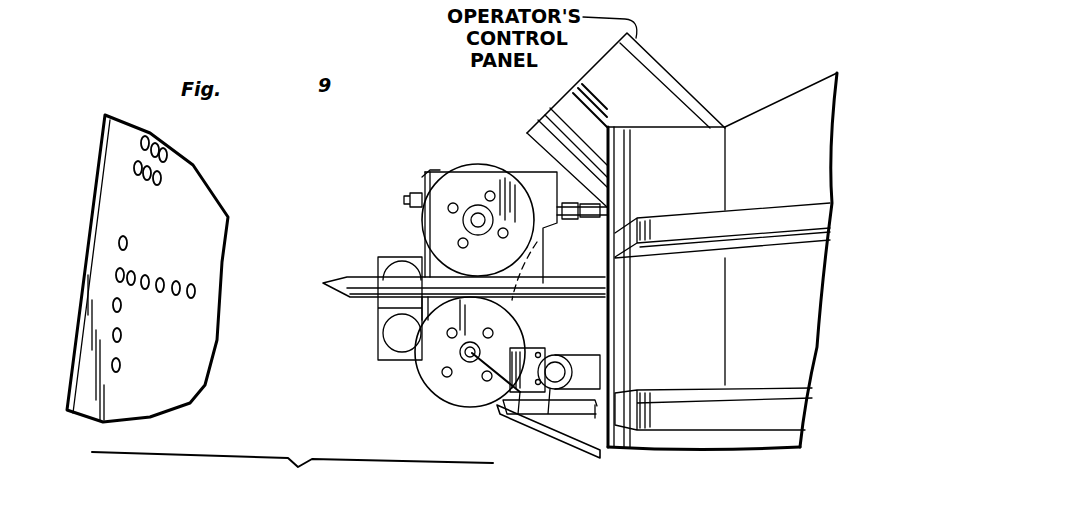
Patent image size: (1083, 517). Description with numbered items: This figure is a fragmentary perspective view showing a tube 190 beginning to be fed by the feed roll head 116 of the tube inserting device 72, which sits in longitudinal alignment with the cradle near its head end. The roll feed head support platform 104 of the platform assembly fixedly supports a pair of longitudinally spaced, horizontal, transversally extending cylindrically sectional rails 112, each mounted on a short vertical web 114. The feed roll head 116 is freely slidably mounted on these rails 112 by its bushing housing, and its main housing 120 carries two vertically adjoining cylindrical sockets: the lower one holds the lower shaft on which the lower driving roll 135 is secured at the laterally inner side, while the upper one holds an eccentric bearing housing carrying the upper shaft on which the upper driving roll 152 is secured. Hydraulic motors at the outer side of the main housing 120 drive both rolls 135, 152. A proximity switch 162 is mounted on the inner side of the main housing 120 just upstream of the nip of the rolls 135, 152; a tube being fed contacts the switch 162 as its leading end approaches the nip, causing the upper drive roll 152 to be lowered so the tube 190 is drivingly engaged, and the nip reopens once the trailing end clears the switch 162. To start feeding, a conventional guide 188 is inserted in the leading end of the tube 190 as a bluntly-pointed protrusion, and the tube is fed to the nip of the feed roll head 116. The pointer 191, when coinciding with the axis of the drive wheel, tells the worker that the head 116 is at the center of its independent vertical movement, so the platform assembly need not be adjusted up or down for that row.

The tube inserting device 72 is at (767, 108).
The roll feed head support platform 104 is at (572, 440).
The rails 112 is at (580, 373).
The short vertical webs 114 is at (557, 408).
The feed roll head 116 is at (473, 160).
The main housing 120 is at (525, 180).
The lower driving roll 135 is at (463, 390).
The upper driving roll 152 is at (445, 188).
The proximity switch 162 is at (543, 268).
The guide 188 is at (340, 275).
The tube 190 is at (125, 238).
The pointer 191 is at (466, 357).